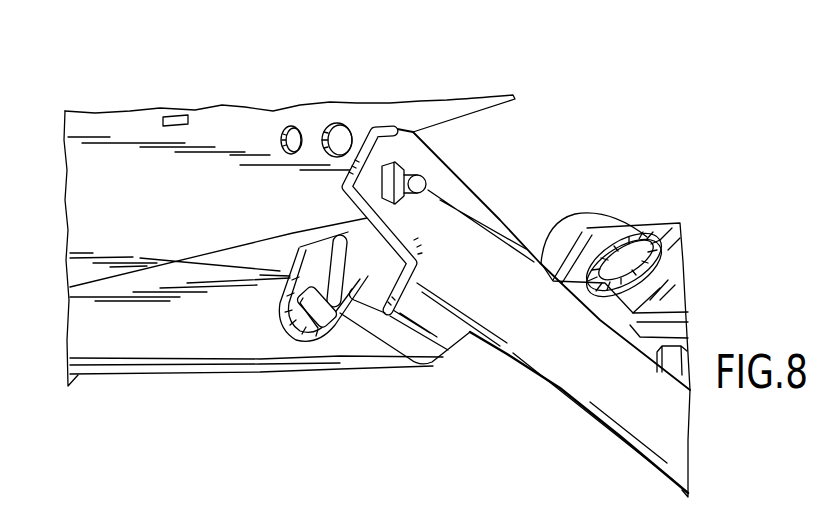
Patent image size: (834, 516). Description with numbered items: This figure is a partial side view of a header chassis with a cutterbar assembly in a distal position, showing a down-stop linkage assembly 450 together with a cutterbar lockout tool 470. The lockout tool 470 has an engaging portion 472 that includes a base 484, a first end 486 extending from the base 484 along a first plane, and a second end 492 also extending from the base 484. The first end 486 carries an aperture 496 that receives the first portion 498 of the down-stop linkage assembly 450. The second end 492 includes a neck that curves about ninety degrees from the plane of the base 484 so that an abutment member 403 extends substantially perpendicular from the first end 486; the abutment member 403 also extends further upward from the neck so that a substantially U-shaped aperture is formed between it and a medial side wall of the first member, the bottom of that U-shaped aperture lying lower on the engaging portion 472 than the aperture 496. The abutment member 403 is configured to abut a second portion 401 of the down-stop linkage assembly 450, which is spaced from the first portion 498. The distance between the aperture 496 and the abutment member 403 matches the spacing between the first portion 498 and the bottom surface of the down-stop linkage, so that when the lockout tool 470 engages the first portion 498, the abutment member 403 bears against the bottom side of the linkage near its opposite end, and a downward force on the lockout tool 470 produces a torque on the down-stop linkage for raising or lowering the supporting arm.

The second portion of the down-stop linkage assembly 401 is at (343, 318).
The abutment member 403 is at (402, 300).
The down-stop linkage assembly 450 is at (289, 240).
The lockout tool 470 is at (590, 441).
The engaging portion 472 is at (467, 180).
The base 484 is at (490, 228).
The first end 486 is at (443, 184).
The second end 492 is at (437, 323).
The aperture 496 is at (352, 173).
The first portion of the down-stop linkage assembly 498 is at (391, 163).